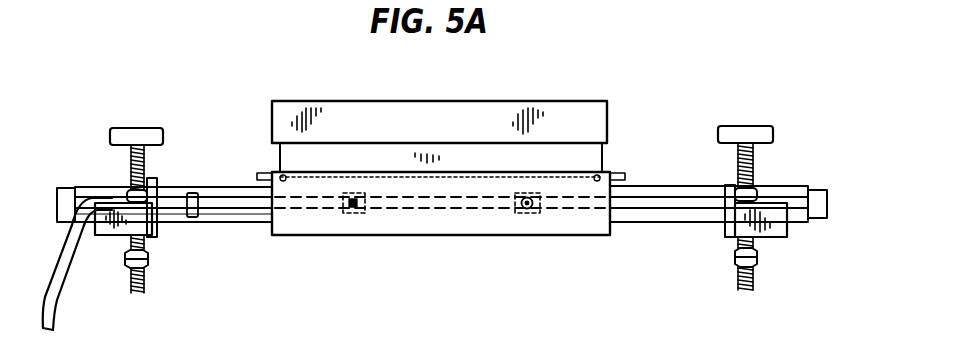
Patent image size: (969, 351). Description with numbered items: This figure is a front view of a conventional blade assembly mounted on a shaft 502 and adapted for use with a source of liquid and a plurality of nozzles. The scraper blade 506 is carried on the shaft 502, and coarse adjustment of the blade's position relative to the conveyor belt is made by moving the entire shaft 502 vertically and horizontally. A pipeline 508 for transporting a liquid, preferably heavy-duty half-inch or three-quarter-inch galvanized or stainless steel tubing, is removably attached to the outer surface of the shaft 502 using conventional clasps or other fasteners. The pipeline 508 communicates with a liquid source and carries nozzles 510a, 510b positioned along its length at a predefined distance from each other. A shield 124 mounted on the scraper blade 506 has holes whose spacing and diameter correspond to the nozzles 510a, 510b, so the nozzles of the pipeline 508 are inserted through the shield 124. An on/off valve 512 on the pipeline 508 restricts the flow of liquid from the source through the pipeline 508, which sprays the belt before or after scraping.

The shaft 502 is at (665, 192).
The scraper blade 506 is at (272, 122).
The pipeline 508 is at (233, 213).
The nozzle 510a is at (355, 214).
The nozzle 510b is at (527, 213).
The on/off valve 512 is at (192, 191).
The shield 124 is at (578, 237).